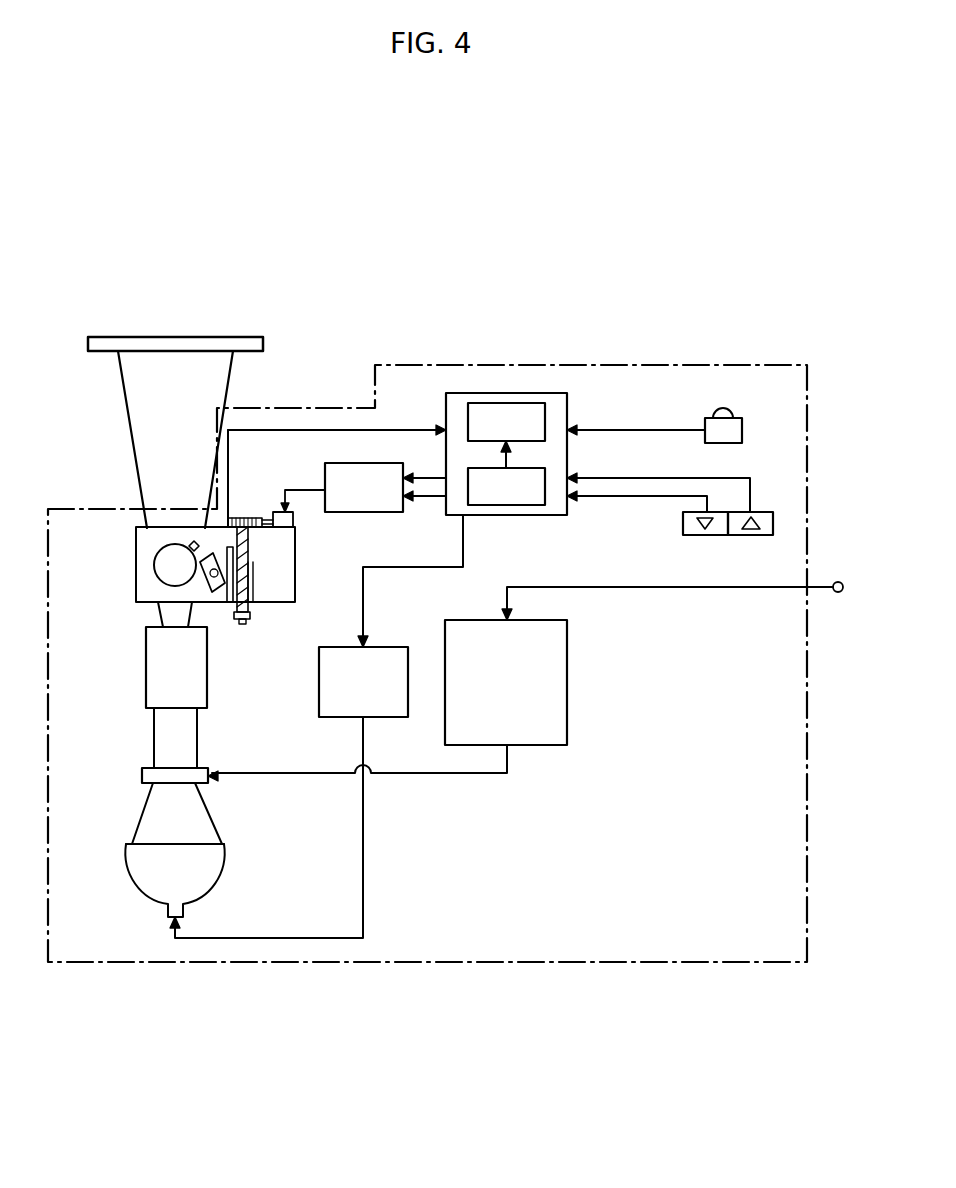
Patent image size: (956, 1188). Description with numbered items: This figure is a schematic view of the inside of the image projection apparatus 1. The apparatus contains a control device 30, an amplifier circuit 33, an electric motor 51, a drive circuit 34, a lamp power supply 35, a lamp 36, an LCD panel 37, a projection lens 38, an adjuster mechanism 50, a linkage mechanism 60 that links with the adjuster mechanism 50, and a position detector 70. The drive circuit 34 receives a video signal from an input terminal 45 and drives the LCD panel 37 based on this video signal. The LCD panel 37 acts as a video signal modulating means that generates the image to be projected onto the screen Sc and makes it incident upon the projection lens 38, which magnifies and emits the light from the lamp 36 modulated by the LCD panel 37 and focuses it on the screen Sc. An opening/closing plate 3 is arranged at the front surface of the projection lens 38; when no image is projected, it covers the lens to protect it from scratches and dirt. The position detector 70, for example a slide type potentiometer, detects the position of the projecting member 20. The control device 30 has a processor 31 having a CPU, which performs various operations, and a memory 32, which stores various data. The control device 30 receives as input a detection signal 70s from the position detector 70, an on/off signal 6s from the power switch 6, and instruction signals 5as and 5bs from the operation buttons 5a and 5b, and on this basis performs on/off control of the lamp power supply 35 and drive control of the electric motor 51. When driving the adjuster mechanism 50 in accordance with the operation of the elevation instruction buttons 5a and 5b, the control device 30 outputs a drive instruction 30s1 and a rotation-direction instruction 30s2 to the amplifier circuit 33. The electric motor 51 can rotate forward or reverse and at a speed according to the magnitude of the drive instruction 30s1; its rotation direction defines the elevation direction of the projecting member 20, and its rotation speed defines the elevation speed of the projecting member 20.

The image projection apparatus 1 is at (625, 965).
The screen Sc is at (224, 337).
The opening/closing plate 3 is at (163, 558).
The adjuster mechanism 50 is at (268, 542).
The linkage mechanism 60 is at (213, 596).
The position detector 70 is at (230, 604).
The projecting member 20 is at (252, 616).
The electric motor 51 is at (294, 524).
The projection lens 38 is at (146, 697).
The LCD panel 37 is at (142, 773).
The lamp 36 is at (212, 865).
The control device 30 is at (563, 393).
The processor 31 is at (512, 403).
The memory 32 is at (505, 505).
The amplifier circuit 33 is at (325, 466).
The drive circuit 34 is at (550, 745).
The lamp power supply 35 is at (321, 717).
The power switch 6 is at (742, 430).
The operation button 5a is at (695, 535).
The operation button 5b is at (763, 535).
The input terminal 45 is at (838, 582).
The detection signal 70s is at (415, 430).
The instruction for defining the rotation direction 30s2 is at (422, 478).
The drive instruction 30s1 is at (422, 496).
The on/off signal 6s is at (646, 430).
The instruction signal 5bs is at (630, 478).
The instruction signal 5as is at (610, 496).